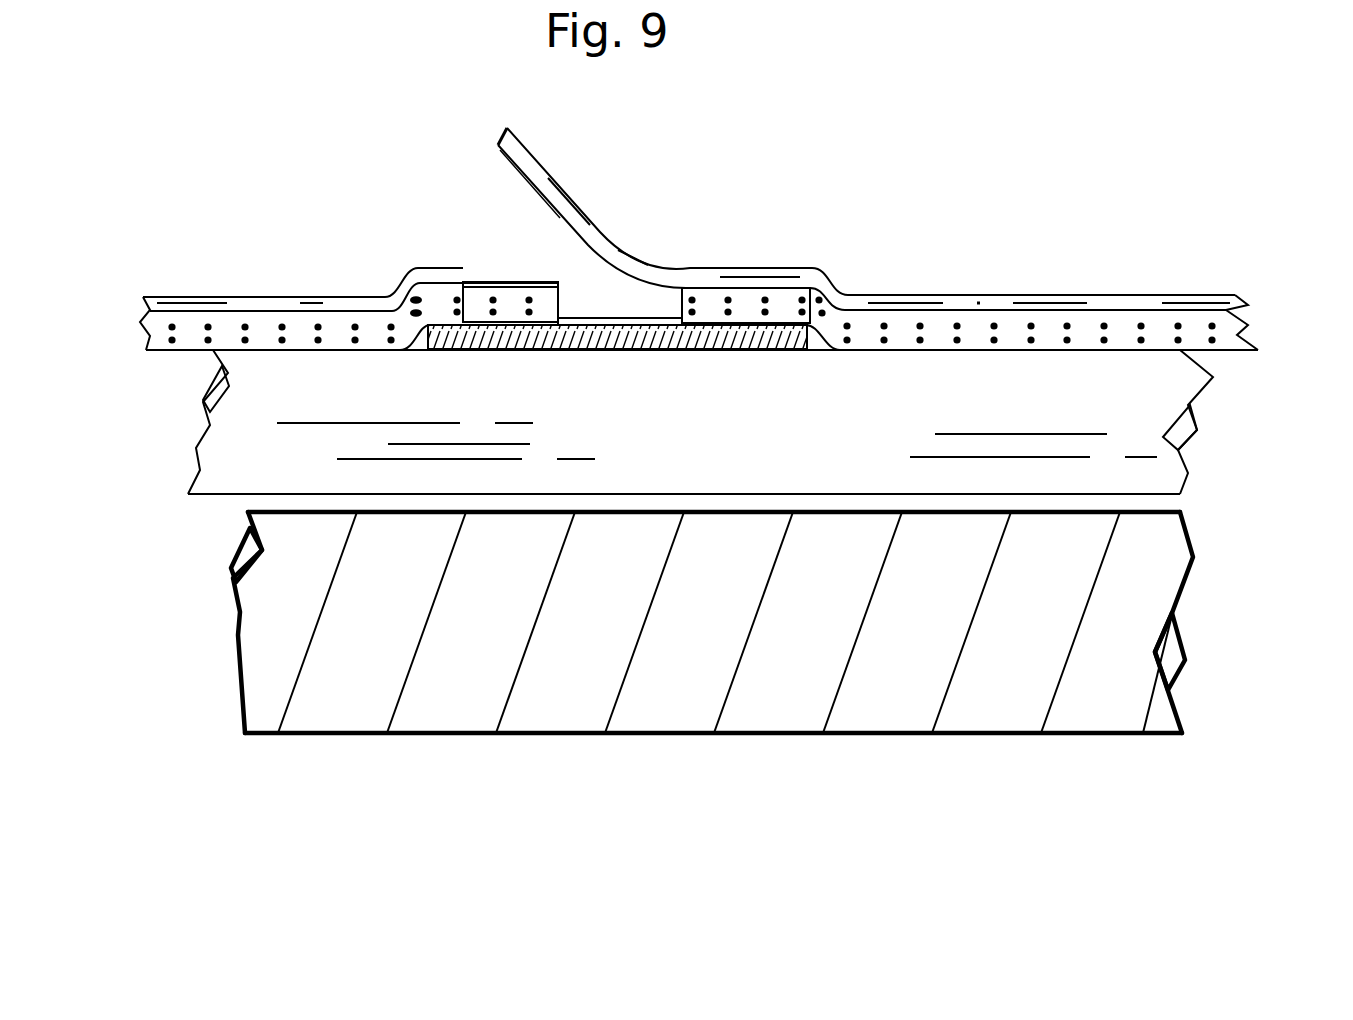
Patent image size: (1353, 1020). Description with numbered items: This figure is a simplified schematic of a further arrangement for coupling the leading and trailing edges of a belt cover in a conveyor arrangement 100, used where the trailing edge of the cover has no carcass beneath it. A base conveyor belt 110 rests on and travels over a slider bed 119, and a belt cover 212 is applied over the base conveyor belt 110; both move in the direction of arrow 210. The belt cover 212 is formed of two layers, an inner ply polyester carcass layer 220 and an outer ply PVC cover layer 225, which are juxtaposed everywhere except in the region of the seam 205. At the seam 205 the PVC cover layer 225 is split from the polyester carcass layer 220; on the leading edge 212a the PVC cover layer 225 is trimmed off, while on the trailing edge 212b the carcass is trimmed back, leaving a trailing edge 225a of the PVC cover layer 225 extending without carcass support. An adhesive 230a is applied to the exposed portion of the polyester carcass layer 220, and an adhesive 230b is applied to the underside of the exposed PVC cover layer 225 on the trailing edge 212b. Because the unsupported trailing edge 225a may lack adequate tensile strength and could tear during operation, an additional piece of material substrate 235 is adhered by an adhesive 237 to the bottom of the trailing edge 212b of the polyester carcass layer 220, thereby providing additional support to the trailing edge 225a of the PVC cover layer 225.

The conveyor arrangement 100 is at (1095, 851).
The base conveyor belt 110 is at (242, 470).
The slider bed 119 is at (420, 718).
The seam 205 is at (713, 218).
The arrow 210 is at (422, 172).
The belt cover 212 is at (140, 350).
The leading edge 212a is at (465, 300).
The trailing edge 212b is at (748, 312).
The polyester carcass layer 220 is at (348, 330).
The PVC cover layer 225 is at (270, 300).
The trailing edge of PVC cover layer 225a is at (578, 212).
The adhesive 230a is at (516, 275).
The adhesive 230b is at (497, 165).
The material substrate 235 is at (590, 340).
The adhesive 237 is at (605, 312).